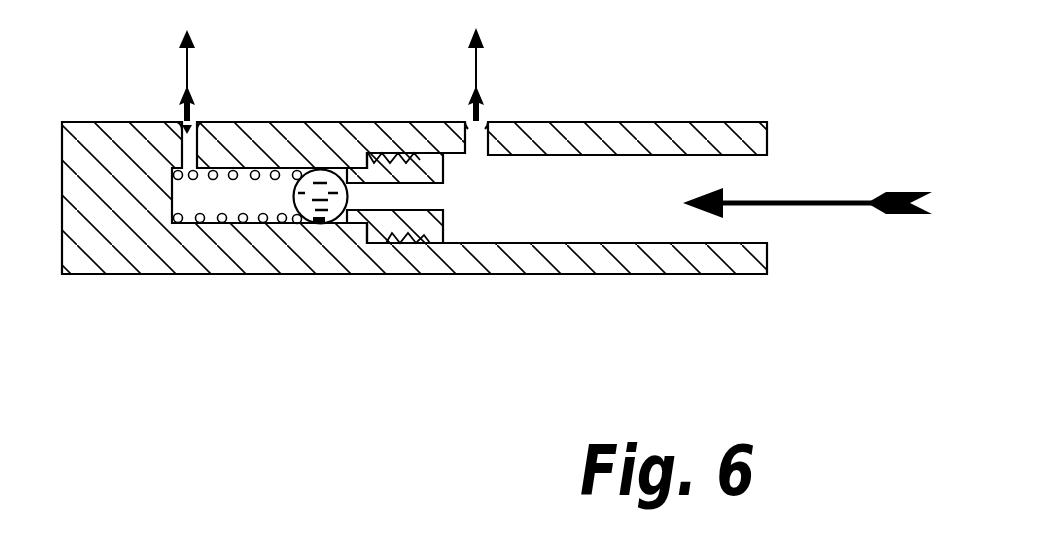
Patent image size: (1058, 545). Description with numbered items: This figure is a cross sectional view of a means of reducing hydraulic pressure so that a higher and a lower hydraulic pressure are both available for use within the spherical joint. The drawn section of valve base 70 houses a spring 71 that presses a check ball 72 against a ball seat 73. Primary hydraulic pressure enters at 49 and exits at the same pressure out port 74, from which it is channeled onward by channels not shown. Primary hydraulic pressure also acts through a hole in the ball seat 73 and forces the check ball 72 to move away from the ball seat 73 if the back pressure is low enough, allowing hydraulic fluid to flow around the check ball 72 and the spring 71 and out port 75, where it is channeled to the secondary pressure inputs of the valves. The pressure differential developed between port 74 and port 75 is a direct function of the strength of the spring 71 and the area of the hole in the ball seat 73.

The primary hydraulic pressure inlet 49 is at (763, 183).
The section of valve base 70 is at (150, 253).
The spring 71 is at (224, 222).
The check ball 72 is at (323, 203).
The ball seat 73 is at (472, 273).
The port 74 is at (480, 122).
The port 75 is at (183, 120).